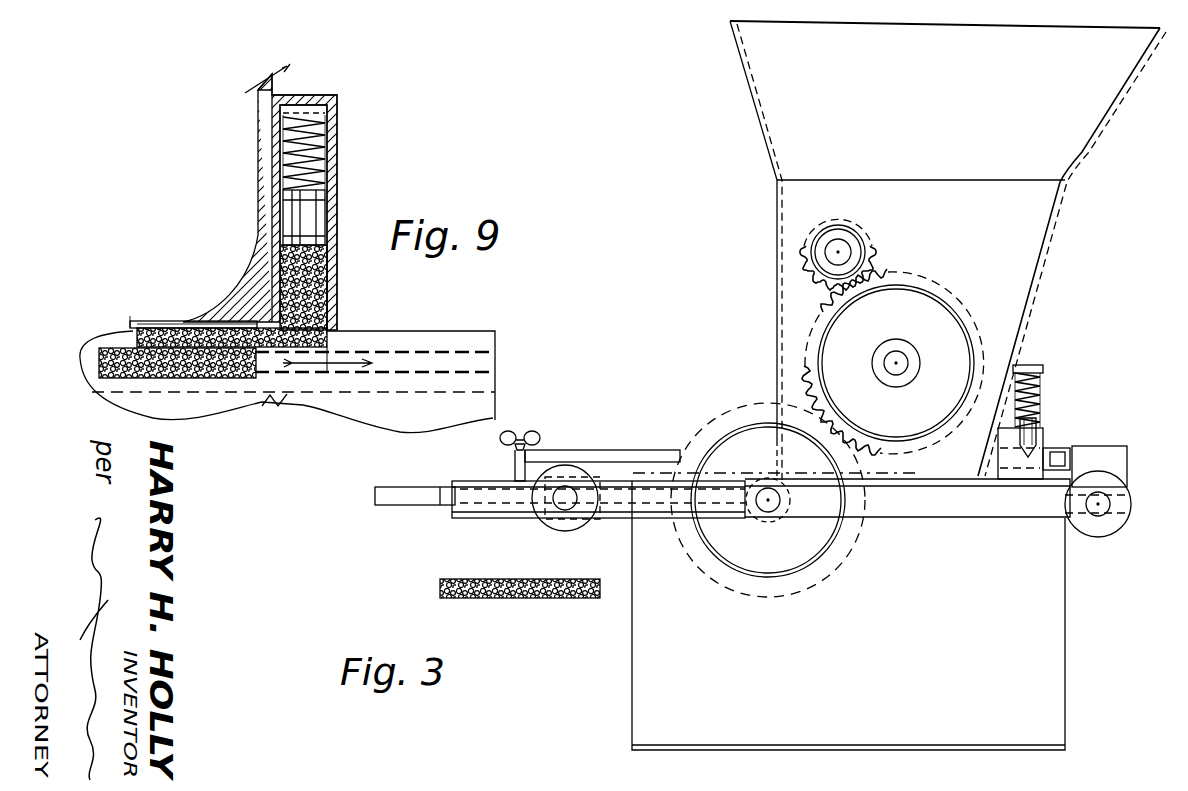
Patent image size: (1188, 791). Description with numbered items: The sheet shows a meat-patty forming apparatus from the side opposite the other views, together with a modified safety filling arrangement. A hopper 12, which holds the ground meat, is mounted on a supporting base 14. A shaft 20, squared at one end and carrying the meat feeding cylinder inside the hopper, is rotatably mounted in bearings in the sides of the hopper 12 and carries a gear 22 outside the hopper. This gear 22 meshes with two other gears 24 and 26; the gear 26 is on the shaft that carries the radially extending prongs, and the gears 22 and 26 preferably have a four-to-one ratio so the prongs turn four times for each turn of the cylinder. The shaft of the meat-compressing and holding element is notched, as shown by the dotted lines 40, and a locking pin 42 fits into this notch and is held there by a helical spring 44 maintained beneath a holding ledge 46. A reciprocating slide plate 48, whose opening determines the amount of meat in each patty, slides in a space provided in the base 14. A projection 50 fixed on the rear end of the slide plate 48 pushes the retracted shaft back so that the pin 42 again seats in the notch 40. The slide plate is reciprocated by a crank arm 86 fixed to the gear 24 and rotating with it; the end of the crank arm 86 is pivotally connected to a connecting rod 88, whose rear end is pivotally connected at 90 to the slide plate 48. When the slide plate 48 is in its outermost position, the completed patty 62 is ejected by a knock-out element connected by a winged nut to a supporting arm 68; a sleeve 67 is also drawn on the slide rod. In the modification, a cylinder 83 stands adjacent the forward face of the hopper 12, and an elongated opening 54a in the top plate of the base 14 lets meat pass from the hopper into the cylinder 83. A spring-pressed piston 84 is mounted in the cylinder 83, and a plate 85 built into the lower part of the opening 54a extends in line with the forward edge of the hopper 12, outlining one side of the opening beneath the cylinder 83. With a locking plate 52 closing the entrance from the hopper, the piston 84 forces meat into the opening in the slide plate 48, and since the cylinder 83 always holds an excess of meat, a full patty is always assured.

In FIG. 9, the hopper 12 is at (260, 197).
In FIG. 3, the hopper 12 is at (776, 285).
In FIG. 9, the supporting base 14 is at (478, 411).
In FIG. 3, the shaft 20 is at (897, 368).
In FIG. 3, the gear 22 is at (937, 320).
In FIG. 3, the gear 24 is at (716, 425).
In FIG. 3, the gear 26 is at (868, 249).
In FIG. 3, the notch 40 is at (1025, 458).
In FIG. 3, the locking pin 42 is at (1035, 448).
In FIG. 3, the helical spring 44 is at (1040, 393).
In FIG. 3, the holding ledge 46 is at (1030, 365).
In FIG. 9, the slide plate 48 is at (485, 368).
In FIG. 3, the slide plate 48 is at (415, 498).
In FIG. 3, the projection 50 is at (1110, 456).
In FIG. 9, the locking plate 52 is at (163, 320).
In FIG. 9, the elongated opening 54a is at (137, 338).
In FIG. 3, the patty 62 is at (548, 600).
In FIG. 3, the sleeve 67 is at (512, 510).
In FIG. 3, the supporting arm 68 is at (588, 452).
In FIG. 9, the cylinder 83 is at (320, 190).
In FIG. 9, the spring-pressed piston 84 is at (316, 226).
In FIG. 9, the plate 85 is at (270, 352).
In FIG. 3, the crank arm 86 is at (661, 535).
In FIG. 3, the connecting rod 88 is at (918, 520).
In FIG. 3, the pivotal connection 90 is at (1098, 506).